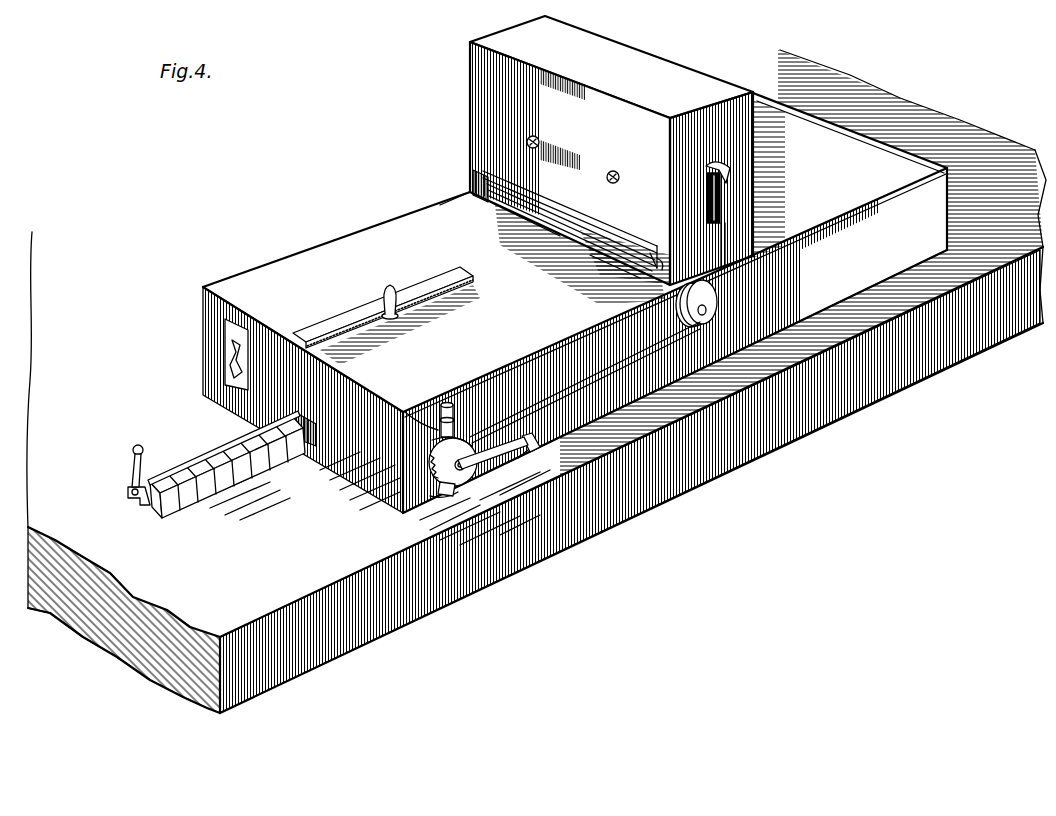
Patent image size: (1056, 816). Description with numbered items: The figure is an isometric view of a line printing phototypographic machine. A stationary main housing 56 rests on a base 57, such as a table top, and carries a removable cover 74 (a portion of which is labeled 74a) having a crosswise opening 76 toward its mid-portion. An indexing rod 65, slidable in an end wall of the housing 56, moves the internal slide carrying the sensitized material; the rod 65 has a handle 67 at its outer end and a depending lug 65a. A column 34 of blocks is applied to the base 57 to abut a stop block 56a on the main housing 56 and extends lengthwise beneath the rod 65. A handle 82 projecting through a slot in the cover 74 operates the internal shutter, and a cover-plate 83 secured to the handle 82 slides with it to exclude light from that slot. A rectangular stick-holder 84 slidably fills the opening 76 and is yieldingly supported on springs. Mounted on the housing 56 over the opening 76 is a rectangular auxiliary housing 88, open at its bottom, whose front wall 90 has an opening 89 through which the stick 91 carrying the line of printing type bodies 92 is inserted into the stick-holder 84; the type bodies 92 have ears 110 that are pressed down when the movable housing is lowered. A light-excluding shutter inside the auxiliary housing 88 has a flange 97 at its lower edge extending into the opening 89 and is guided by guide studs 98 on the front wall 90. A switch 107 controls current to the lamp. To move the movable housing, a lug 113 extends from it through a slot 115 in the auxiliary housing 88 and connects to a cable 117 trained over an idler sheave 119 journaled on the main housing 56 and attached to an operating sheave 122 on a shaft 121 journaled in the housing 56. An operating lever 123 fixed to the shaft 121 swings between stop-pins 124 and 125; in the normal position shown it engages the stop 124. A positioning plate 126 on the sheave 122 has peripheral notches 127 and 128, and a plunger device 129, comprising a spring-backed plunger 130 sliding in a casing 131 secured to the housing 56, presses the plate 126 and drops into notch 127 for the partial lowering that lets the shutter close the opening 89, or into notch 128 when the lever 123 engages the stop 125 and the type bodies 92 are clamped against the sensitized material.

The column of blocks 34 is at (235, 480).
The main housing 56 is at (575, 303).
The stop block 56a is at (262, 424).
The base 57 is at (878, 103).
The indexing rod 65 is at (162, 470).
The depending lug 65a is at (145, 503).
The handle 67 is at (133, 451).
The cover 74 is at (436, 302).
The top plate portion 74a is at (850, 174).
The opening 76 is at (597, 250).
The handle 82 is at (382, 290).
The cover-plate 83 is at (413, 295).
The stick-holder 84 is at (453, 220).
The auxiliary housing 88 is at (611, 143).
The opening 89 is at (660, 260).
The front wall 90 is at (601, 53).
The stick 91 is at (507, 205).
The printing type bodies 92 is at (520, 215).
The flange 97 is at (476, 172).
The guide studs 98 is at (536, 137).
The switch 107 is at (222, 360).
The ears 110 is at (557, 210).
The lug 113 is at (712, 163).
The slot 115 is at (708, 205).
The cable 117 is at (728, 230).
The idler sheave 119 is at (708, 298).
The shaft 121 is at (468, 440).
The operating sheave 122 is at (440, 452).
The operating lever 123 is at (518, 458).
The stop-pin 124 is at (505, 457).
The stop-pin 125 is at (430, 496).
The positioning plate 126 is at (432, 440).
The notch 127 is at (522, 436).
The notch 128 is at (452, 487).
The plunger device 129 is at (449, 403).
The plunger 130 is at (412, 410).
The casing 131 is at (445, 404).